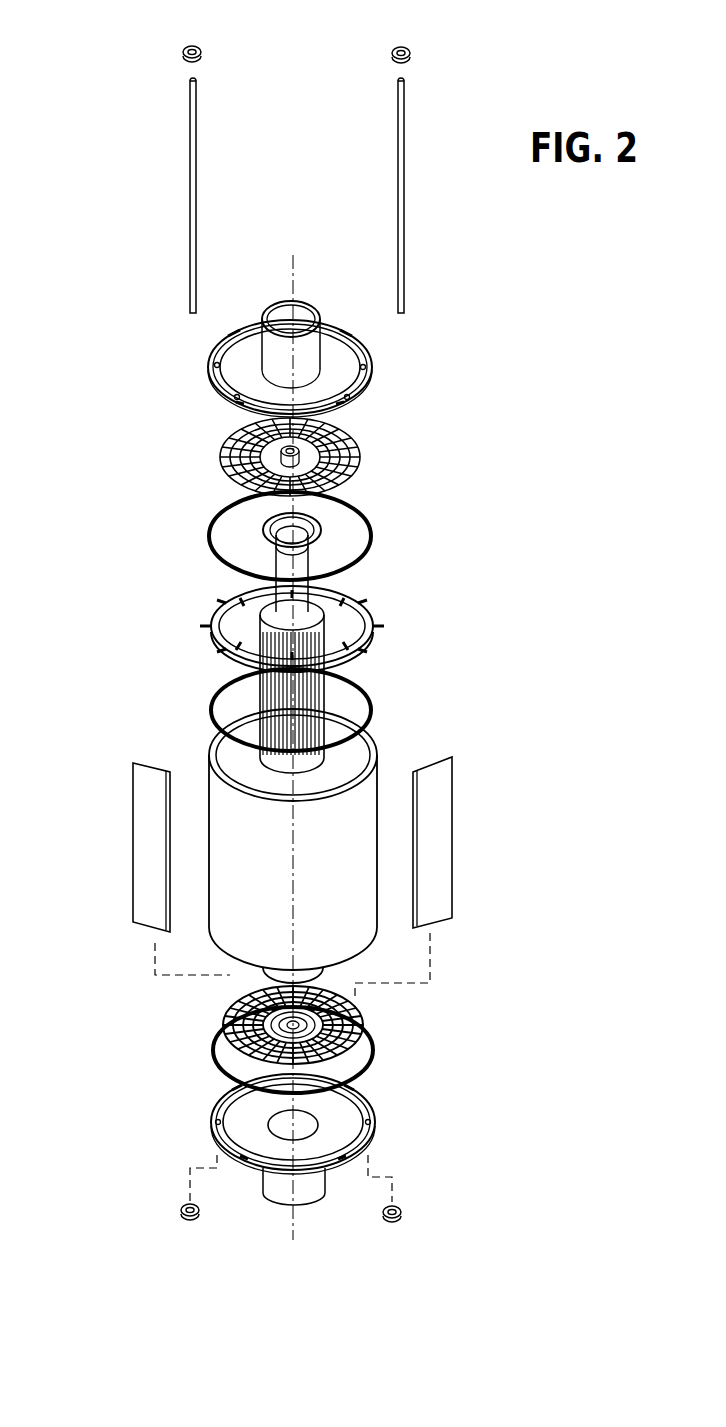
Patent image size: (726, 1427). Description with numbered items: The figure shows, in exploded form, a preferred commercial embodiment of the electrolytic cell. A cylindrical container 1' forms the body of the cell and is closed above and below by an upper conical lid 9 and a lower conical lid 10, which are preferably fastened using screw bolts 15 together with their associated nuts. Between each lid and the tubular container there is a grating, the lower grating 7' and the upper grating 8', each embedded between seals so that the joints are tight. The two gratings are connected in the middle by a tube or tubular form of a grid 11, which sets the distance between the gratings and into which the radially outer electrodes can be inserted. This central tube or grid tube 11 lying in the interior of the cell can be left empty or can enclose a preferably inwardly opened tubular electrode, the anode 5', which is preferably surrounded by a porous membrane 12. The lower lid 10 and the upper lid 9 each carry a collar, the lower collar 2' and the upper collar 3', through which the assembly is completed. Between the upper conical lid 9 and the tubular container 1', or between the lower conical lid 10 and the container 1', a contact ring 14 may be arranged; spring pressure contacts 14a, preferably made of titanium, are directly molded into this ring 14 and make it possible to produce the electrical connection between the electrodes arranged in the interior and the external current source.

The cylindrical container 1' is at (337, 846).
The lower bearing collar 2' is at (311, 1207).
The upper bearing collar 3' is at (314, 322).
The tubular electrode (anode) 5' is at (350, 551).
The grating 7' is at (342, 1025).
The grating 8' is at (341, 453).
The upper conical lid 9 is at (372, 368).
The lower conical lid 10 is at (375, 1137).
The tube or tubular grid 11 is at (366, 647).
The porous membrane 12 is at (322, 540).
The contact ring 14 is at (220, 600).
The spring pressure contacts 14a is at (208, 628).
The screw bolts 15 is at (400, 155).